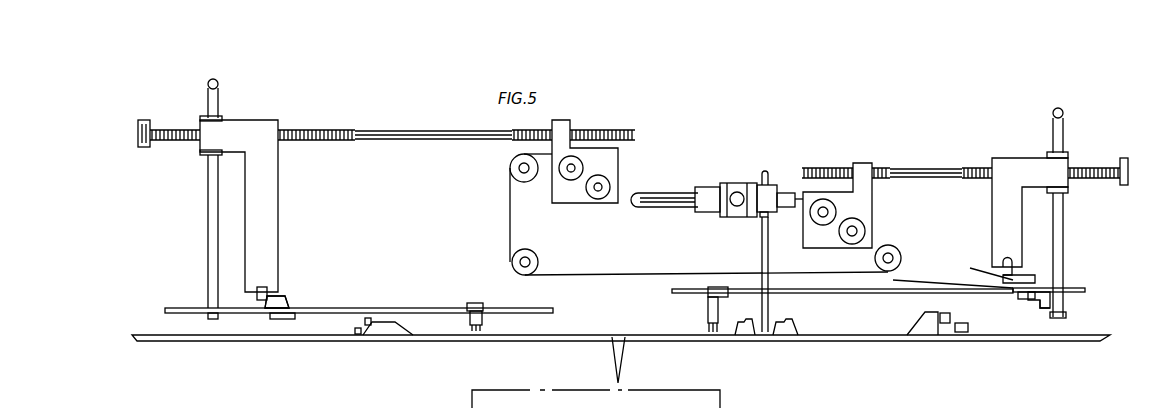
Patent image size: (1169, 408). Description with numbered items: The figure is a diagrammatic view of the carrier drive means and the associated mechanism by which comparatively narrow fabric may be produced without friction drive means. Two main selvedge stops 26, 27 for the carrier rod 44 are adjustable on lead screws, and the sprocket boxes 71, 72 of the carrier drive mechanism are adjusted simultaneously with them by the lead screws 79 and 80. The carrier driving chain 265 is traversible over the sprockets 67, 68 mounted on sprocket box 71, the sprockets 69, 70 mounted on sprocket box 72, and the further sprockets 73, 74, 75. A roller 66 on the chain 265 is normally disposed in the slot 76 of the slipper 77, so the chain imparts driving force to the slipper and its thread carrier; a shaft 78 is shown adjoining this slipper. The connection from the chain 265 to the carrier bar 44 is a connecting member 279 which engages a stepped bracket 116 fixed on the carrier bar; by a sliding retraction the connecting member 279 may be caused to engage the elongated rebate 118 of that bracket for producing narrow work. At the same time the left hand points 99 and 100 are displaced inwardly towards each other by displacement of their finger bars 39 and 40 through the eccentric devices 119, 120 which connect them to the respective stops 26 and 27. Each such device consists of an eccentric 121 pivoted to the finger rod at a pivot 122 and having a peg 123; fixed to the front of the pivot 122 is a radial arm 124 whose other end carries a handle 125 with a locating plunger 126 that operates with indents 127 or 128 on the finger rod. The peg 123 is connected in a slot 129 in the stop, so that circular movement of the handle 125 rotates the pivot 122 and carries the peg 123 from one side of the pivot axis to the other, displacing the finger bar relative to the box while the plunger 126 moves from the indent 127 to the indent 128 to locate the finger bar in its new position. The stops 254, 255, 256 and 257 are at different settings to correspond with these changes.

The main selvedge stop 26 is at (270, 216).
The main selvedge stop 27 is at (1007, 213).
The fashioning finger bar 39 is at (330, 308).
The fashioning finger bar 40 is at (1078, 300).
The carrier rod 44 is at (845, 341).
The roller 66 is at (740, 196).
The sprocket 67 is at (578, 168).
The sprocket 68 is at (610, 187).
The sprocket 69 is at (836, 212).
The sprocket 70 is at (865, 231).
The sprocket box 71 is at (600, 155).
The sprocket box 72 is at (850, 200).
The sprocket 73 is at (518, 168).
The sprocket 74 is at (511, 262).
The sprocket 75 is at (901, 254).
The slot 76 is at (748, 182).
The slipper 77 is at (715, 212).
The shaft 78 is at (657, 205).
The lead screw 79 is at (460, 130).
The lead screw 80 is at (838, 167).
The left hand point 99 is at (483, 324).
The left hand point 100 is at (707, 311).
The stepped bracket 116 is at (745, 334).
The elongated rebate 118 is at (773, 323).
The eccentric device 119 is at (277, 295).
The eccentric device 120 is at (1030, 274).
The eccentric 121 is at (1050, 288).
The pivot 122 is at (1005, 286).
The peg 123 is at (972, 272).
The radial arm 124 is at (1045, 292).
The handle 125 is at (1050, 300).
The locating plunger 126 is at (1030, 303).
The indent 127 is at (1022, 299).
The indent 128 is at (1007, 293).
The slot 129 is at (1012, 260).
The stop 254 is at (947, 323).
The stop 255 is at (967, 332).
The stop 256 is at (357, 333).
The stop 257 is at (360, 323).
The carrier driving chain 265 is at (600, 277).
The connecting member 279 is at (771, 310).